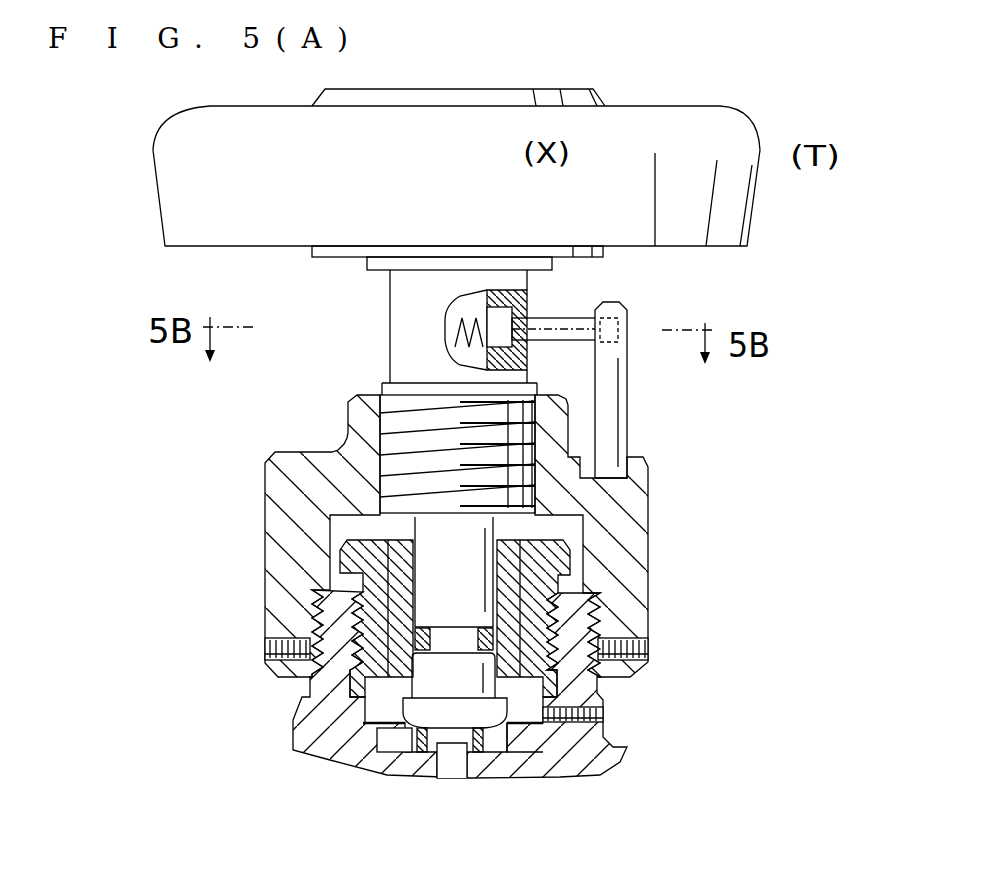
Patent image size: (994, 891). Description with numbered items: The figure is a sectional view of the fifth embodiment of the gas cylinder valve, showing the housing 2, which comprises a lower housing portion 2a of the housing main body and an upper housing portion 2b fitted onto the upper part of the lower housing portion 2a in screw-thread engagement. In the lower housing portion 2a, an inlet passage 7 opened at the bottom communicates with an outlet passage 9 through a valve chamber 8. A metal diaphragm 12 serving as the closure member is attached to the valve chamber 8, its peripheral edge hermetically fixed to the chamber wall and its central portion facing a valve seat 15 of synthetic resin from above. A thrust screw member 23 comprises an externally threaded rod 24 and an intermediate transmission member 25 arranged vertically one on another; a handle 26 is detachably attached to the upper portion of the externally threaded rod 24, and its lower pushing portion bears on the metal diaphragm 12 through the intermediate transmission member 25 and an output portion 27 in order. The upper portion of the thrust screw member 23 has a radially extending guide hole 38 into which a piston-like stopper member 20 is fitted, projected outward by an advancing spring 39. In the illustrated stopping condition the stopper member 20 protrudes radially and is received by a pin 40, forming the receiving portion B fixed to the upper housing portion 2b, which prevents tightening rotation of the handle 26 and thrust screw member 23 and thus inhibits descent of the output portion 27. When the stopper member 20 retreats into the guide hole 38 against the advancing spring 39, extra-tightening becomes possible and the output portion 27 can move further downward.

The housing 2 is at (391, 586).
The lower housing portion 2a is at (277, 729).
The upper housing portion 2b is at (258, 614).
The inlet passage 7 is at (453, 768).
The valve chamber 8 is at (390, 725).
The outlet passage 9 is at (388, 763).
The metal diaphragm 12 is at (503, 735).
The valve seat 15 is at (497, 738).
The stopper member 20 is at (495, 305).
The thrust screw member 23 is at (548, 492).
The externally threaded rod 24 is at (383, 423).
The intermediate transmission member 25 is at (490, 610).
The handle 26 is at (740, 140).
The output portion 27 is at (455, 712).
The guide hole 38 is at (463, 303).
The advancing spring 39 is at (452, 325).
The pin 40 is at (628, 397).
The receiving portion B is at (628, 315).